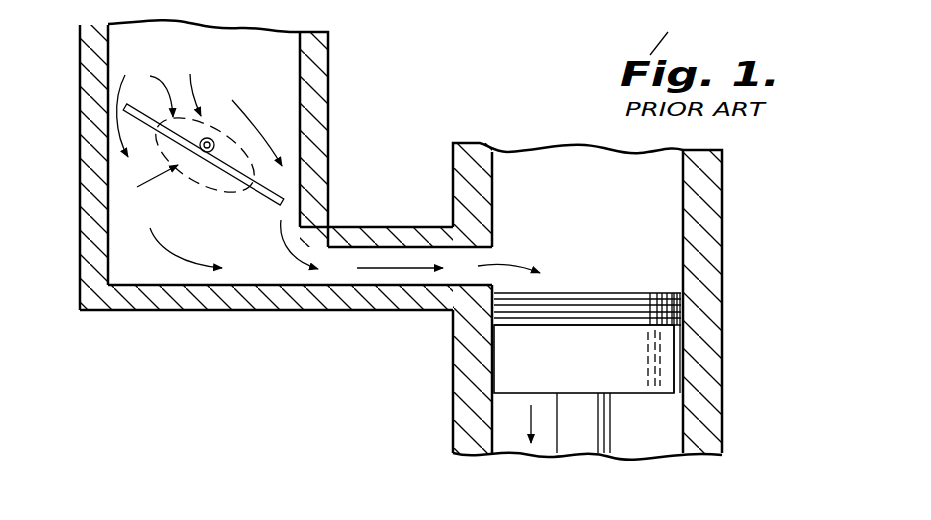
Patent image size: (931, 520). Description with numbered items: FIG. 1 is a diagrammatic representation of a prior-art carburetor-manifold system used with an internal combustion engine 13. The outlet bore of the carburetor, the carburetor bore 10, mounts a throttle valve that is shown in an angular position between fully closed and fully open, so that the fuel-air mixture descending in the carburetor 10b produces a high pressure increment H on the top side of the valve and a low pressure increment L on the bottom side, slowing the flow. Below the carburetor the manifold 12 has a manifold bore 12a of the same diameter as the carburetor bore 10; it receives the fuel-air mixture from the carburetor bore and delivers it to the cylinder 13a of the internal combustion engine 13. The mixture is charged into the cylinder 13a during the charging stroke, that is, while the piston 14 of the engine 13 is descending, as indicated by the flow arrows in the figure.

The carburetor bore 10 is at (302, 110).
The carburetor 10b is at (322, 175).
The manifold 12 is at (142, 294).
The manifold bore 12a is at (110, 237).
The internal combustion engine 13 is at (712, 204).
The cylinder 13a is at (688, 424).
The piston 14 is at (587, 373).